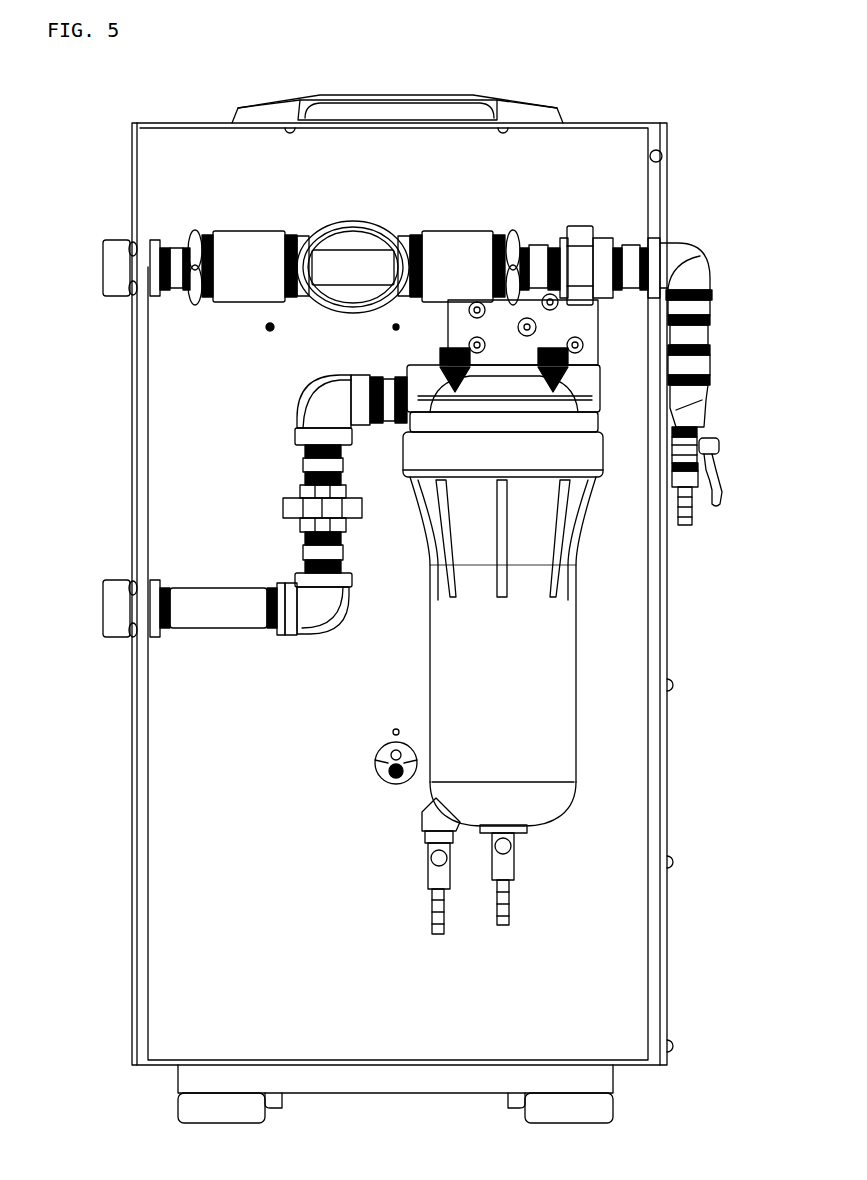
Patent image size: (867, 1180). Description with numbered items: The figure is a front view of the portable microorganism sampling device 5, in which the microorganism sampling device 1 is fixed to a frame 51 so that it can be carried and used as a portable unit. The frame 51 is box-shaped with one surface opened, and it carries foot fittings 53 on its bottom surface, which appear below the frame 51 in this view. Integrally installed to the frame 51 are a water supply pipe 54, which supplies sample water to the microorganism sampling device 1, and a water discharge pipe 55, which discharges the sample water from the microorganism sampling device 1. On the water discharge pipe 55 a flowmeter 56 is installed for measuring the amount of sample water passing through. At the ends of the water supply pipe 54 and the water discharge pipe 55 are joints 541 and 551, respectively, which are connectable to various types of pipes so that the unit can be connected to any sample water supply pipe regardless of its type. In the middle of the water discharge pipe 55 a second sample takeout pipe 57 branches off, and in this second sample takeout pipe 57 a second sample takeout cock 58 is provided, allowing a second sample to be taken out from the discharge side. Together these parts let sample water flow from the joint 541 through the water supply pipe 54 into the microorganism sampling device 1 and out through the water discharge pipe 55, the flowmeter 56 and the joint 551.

The microorganism sampling device 1 is at (532, 650).
The portable microorganism sampling device 5 is at (745, 114).
The frame 51 is at (182, 723).
The foot fittings 53 is at (585, 1108).
The water supply pipe 54 is at (305, 652).
The water discharge pipe 55 is at (553, 217).
The flowmeter 56 is at (352, 238).
The second sample takeout pipe 57 is at (697, 420).
The second sample takeout cock 58 is at (722, 506).
The joint 541 is at (118, 600).
The joint 551 is at (118, 243).